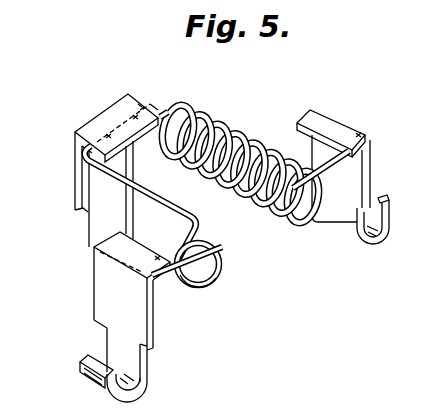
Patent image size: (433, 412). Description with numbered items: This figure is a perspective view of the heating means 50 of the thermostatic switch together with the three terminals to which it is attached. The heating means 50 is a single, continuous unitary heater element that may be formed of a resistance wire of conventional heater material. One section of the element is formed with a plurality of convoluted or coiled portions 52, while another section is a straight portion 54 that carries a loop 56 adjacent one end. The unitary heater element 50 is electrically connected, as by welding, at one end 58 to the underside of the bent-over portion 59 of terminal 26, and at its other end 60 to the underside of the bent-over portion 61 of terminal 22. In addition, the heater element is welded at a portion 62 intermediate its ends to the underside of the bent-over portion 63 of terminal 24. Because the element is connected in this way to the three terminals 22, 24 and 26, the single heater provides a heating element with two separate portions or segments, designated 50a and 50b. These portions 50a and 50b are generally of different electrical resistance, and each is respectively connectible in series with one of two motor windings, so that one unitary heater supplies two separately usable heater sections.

The terminal 22 is at (106, 317).
The terminal 24 is at (93, 160).
The terminal 26 is at (343, 177).
The heating means 50 is at (219, 204).
The heater portion 50a is at (177, 238).
The heater portion 50b is at (240, 79).
The coiled portions 52 is at (253, 141).
The straight portion 54 is at (184, 211).
The loop 56 is at (216, 283).
The end of heater element 58 is at (347, 161).
The bent-over portion of terminal 26 59 is at (323, 122).
The end of heater element 60 is at (188, 290).
The bent-over portion of terminal 22 61 is at (125, 251).
The intermediate portion of heater element 62 is at (154, 113).
The bent-over portion of terminal 24 63 is at (100, 122).